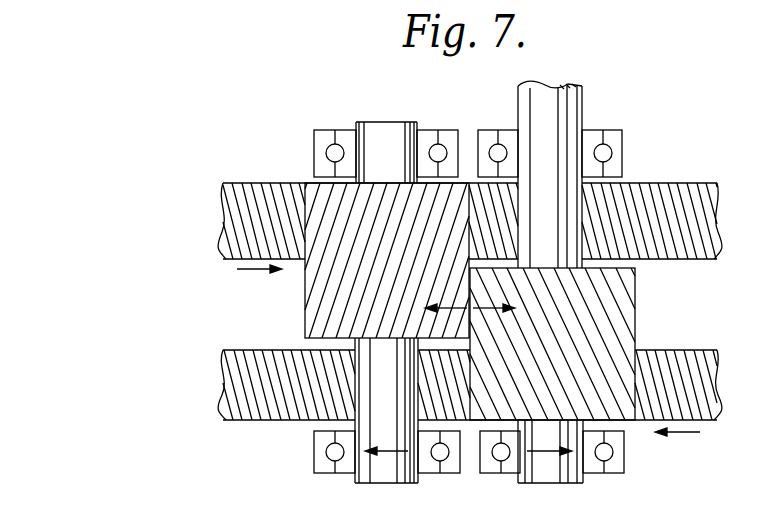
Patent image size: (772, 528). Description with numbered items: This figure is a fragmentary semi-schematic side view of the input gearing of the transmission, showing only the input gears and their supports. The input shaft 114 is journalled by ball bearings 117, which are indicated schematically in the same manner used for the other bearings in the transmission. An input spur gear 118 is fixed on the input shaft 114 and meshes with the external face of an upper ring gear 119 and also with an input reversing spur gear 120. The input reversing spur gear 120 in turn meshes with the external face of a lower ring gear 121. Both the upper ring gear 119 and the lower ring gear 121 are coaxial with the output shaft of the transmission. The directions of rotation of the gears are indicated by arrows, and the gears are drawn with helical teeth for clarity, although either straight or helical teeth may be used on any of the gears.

The input shaft 114 is at (583, 103).
The ball bearings 117 is at (623, 142).
The input spur gear 118 is at (637, 308).
The upper ring gear 119 is at (687, 183).
The input reversing spur gear 120 is at (305, 297).
The lower ring gear 121 is at (697, 350).